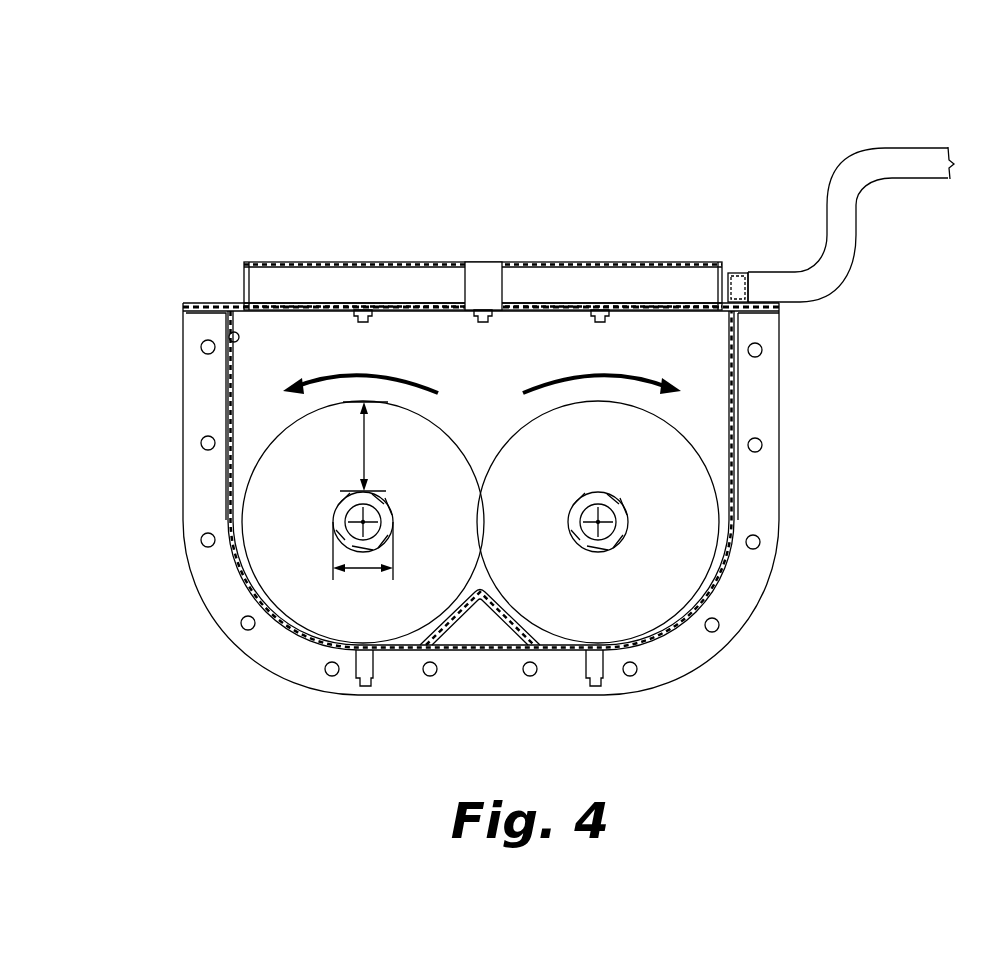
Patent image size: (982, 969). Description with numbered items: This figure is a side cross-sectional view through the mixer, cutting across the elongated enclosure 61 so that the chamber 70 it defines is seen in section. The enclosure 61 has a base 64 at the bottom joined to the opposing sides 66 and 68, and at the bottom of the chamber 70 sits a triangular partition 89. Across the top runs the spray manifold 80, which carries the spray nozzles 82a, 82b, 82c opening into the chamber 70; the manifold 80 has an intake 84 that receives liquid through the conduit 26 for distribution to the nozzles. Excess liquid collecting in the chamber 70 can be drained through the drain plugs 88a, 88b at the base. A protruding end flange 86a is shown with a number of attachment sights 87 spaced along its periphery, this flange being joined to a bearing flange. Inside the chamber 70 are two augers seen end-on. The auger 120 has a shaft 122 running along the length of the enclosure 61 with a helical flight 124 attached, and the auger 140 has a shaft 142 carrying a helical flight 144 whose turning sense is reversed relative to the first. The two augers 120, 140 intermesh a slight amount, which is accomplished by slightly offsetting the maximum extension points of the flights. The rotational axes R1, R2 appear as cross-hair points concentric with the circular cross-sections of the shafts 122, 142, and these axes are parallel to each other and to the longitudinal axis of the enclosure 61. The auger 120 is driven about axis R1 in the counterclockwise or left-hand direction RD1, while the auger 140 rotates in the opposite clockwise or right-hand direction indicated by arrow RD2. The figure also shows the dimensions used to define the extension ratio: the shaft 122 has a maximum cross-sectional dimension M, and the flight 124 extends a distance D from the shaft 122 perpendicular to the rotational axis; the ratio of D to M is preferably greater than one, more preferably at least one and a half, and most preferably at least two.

The conduit 26 is at (874, 150).
The enclosure 61 is at (212, 298).
The base 64 is at (462, 652).
The side 66 is at (228, 394).
The side 68 is at (738, 370).
The chamber 70 is at (229, 340).
The spray manifold 80 is at (448, 256).
The spray nozzle 82a is at (367, 325).
The spray nozzle 82b is at (487, 325).
The spray nozzle 82c is at (603, 325).
The intake 84 is at (727, 270).
The end flange 86a is at (793, 330).
The attachment sights 87 is at (758, 450).
The drain plug 88a is at (366, 688).
The drain plug 88b is at (596, 687).
The triangular partition 89 is at (518, 598).
The auger 120 is at (236, 478).
The shaft 122 is at (338, 514).
The helical flight 124 is at (337, 600).
The auger 140 is at (694, 420).
The shaft 142 is at (606, 549).
The helical flight 144 is at (618, 612).
The rotational axis R1 is at (340, 526).
The rotational axis R2 is at (624, 514).
The rotation direction RD1 is at (360, 367).
The rotation direction RD2 is at (602, 367).
The flight extension distance D is at (364, 446).
The maximum cross-sectional dimension M is at (363, 563).